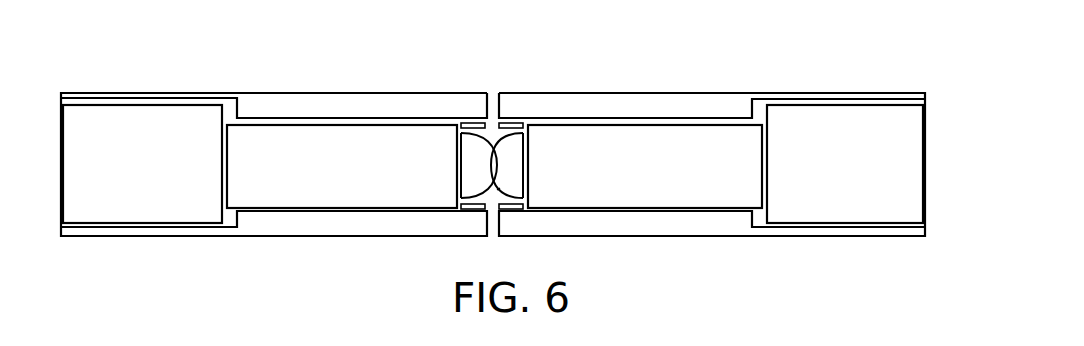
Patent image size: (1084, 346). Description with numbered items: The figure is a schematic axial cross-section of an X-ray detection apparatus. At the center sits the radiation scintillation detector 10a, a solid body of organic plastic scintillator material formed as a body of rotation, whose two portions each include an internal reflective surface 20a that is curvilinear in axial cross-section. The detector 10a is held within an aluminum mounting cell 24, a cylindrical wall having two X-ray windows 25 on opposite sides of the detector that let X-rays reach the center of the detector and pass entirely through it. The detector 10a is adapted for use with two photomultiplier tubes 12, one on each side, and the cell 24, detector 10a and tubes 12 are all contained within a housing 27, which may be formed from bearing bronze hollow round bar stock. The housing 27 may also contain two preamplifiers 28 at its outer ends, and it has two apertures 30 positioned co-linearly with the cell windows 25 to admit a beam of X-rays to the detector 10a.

The housing 27 is at (360, 92).
The preamplifiers 28 is at (153, 169).
The photomultiplier tubes 12 is at (352, 179).
The mounting cell 24 is at (472, 122).
The X-ray windows 25 is at (492, 165).
The internal reflective surface 20a is at (500, 190).
The radiation scintillation detector 10a is at (491, 118).
The apertures 30 is at (495, 96).